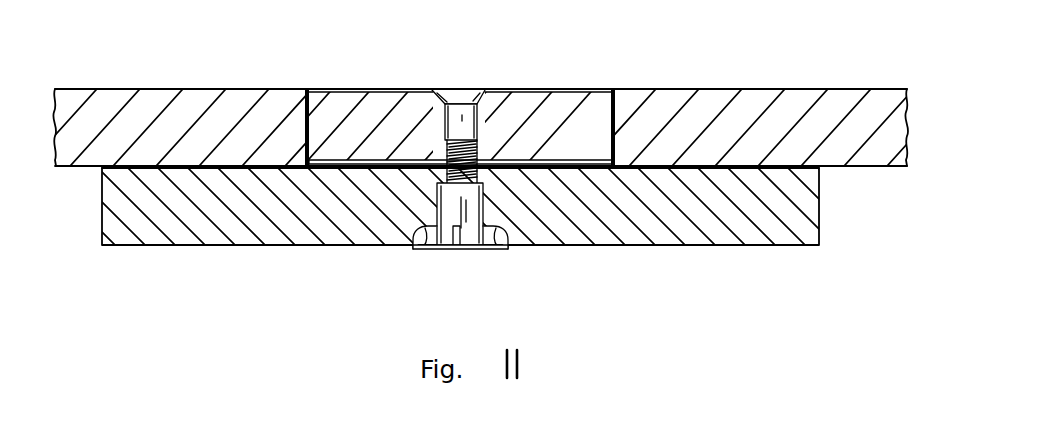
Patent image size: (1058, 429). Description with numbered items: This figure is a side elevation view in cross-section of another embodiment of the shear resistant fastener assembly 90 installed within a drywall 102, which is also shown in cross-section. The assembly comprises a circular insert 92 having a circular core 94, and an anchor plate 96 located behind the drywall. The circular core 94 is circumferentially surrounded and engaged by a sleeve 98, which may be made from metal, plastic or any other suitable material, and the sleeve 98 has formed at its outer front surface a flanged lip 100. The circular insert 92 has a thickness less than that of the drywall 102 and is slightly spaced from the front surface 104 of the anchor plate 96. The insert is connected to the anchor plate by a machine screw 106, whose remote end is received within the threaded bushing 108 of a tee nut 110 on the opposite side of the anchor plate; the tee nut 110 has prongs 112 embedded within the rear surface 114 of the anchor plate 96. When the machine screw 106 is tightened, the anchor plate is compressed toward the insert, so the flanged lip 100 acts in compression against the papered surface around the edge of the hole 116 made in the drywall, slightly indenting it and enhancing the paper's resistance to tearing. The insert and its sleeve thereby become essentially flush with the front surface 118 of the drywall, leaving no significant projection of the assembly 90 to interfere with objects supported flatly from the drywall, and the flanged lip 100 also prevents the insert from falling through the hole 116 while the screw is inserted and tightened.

The shear resistant fastener assembly 90 is at (195, 78).
The circular insert 92 is at (537, 160).
The circular core 94 is at (373, 108).
The anchor plate 96 is at (822, 216).
The sleeve 98 is at (624, 104).
The flanged lip 100 is at (617, 88).
The drywall 102 is at (737, 88).
The front surface of the anchor plate 104 is at (506, 163).
The machine screw 106 is at (463, 99).
The threaded bushing 108 is at (467, 207).
The tee nut 110 is at (428, 249).
The prongs 112 is at (414, 246).
The rear surface of the anchor plate 114 is at (578, 246).
The hole 116 is at (292, 138).
The front surface of the drywall 118 is at (686, 86).